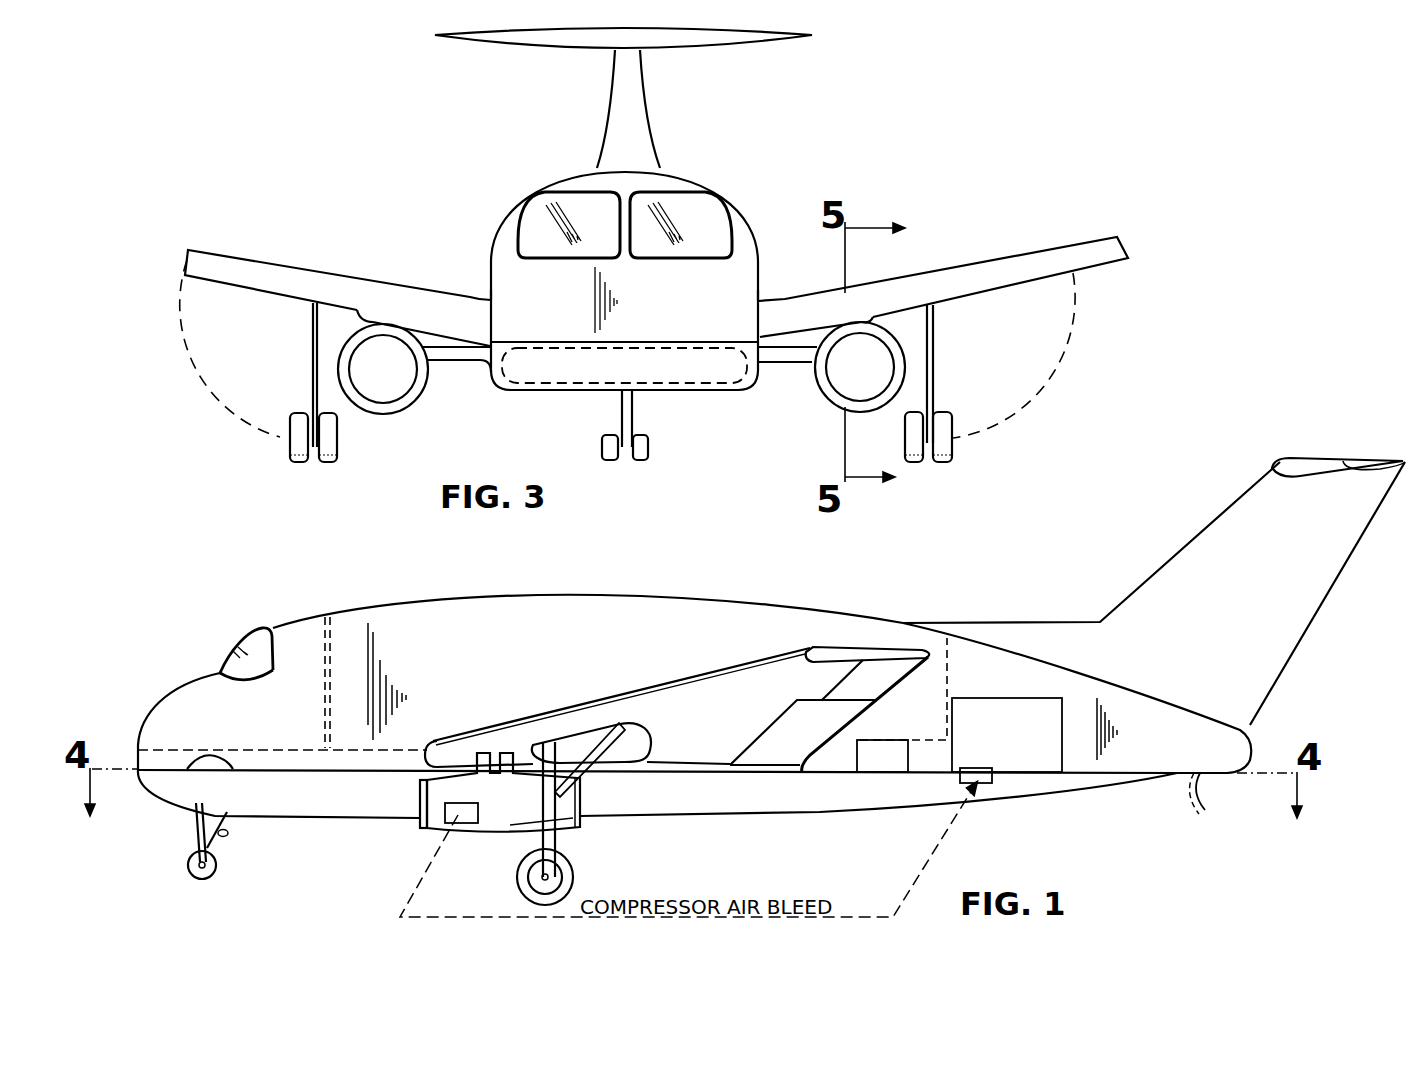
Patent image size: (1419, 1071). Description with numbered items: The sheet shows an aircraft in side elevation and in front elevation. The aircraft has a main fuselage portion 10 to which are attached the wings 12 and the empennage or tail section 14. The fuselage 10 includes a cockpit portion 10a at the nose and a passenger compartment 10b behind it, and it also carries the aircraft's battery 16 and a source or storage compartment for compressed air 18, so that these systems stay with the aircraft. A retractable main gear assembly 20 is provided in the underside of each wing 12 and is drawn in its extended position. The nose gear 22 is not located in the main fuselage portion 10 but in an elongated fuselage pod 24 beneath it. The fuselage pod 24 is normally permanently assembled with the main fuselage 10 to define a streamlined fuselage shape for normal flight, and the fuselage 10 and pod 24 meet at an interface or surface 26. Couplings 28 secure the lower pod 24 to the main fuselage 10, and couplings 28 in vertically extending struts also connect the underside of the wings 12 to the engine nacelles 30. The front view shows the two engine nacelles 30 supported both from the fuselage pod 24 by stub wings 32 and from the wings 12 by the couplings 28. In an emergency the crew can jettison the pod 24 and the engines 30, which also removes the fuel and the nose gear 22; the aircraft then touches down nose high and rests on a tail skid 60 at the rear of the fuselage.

In FIG. 3, the main fuselage portion 10 is at (714, 190).
In FIG. 1, the main fuselage portion 10 is at (438, 600).
In FIG. 1, the cockpit portion 10a is at (297, 663).
In FIG. 1, the passenger compartment 10b is at (533, 630).
In FIG. 3, the wing 12 is at (265, 262).
In FIG. 1, the wing 12 is at (587, 697).
In FIG. 3, the empennage or tail section 14 is at (645, 86).
In FIG. 1, the empennage or tail section 14 is at (1187, 540).
In FIG. 1, the battery 16 is at (910, 772).
In FIG. 1, the source or storage compartment for compressed air 18 is at (1062, 747).
In FIG. 3, the main gear assembly 20 is at (312, 345).
In FIG. 1, the main gear assembly 20 is at (557, 842).
In FIG. 3, the nose gear 22 is at (632, 413).
In FIG. 1, the nose gear 22 is at (217, 842).
In FIG. 3, the fuselage pod 24 is at (525, 374).
In FIG. 1, the fuselage pod 24 is at (334, 818).
In FIG. 3, the interface or surface 26 is at (517, 341).
In FIG. 1, the interface or surface 26 is at (203, 759).
In FIG. 3, the coupling 28 is at (357, 300).
In FIG. 3, the engine nacelle 30 is at (398, 410).
In FIG. 1, the engine nacelle 30 is at (420, 823).
In FIG. 3, the stub wing 32 is at (477, 363).
In FIG. 1, the tail skid 60 is at (1227, 787).